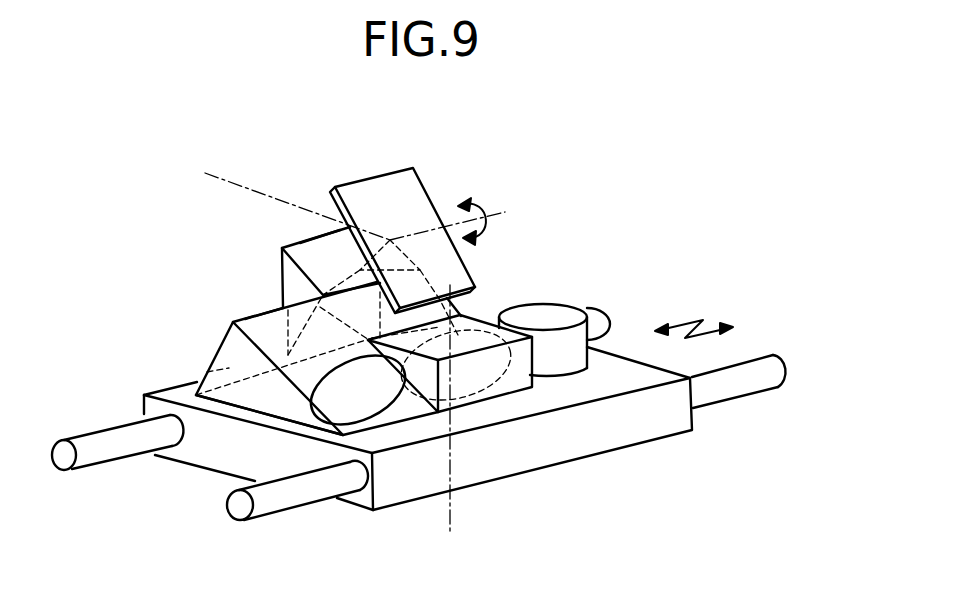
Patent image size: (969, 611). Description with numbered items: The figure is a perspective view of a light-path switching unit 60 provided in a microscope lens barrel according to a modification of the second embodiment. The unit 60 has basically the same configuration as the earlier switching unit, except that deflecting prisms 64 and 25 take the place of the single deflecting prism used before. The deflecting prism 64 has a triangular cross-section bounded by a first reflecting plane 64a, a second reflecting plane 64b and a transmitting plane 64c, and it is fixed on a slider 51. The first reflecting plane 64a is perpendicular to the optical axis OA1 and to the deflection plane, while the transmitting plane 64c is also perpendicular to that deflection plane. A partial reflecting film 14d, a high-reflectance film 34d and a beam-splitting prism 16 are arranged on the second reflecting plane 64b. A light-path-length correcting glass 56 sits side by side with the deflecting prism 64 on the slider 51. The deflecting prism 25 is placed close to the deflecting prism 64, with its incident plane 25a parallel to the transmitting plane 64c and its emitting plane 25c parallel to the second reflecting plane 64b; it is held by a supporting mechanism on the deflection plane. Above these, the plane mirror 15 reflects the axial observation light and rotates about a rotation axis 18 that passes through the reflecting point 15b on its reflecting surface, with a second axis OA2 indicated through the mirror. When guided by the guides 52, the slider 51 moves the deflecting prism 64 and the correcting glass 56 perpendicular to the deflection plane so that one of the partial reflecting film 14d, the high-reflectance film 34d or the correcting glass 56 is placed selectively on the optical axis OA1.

The light-path switching unit 60 is at (677, 153).
The slider 51 is at (652, 428).
The guide 52 is at (96, 466).
The light-path-length correcting glass 56 is at (559, 307).
The beam-splitting prism 16 is at (531, 390).
The partial reflecting film 14d is at (482, 400).
The high-reflectance film 34d is at (373, 426).
The deflecting prism 64 is at (222, 342).
The first reflecting plane 64a is at (253, 396).
The second reflecting plane 64b is at (262, 314).
The transmitting plane 64c is at (203, 372).
The deflecting prism 25 is at (282, 245).
The incident plane 25a is at (281, 285).
The emitting plane 25c is at (305, 252).
The plane mirror 15 is at (390, 170).
The reflecting point 15b is at (391, 239).
The rotation axis 18 is at (492, 210).
The optical axis OA1 is at (452, 518).
The optical axis OA2 is at (230, 172).